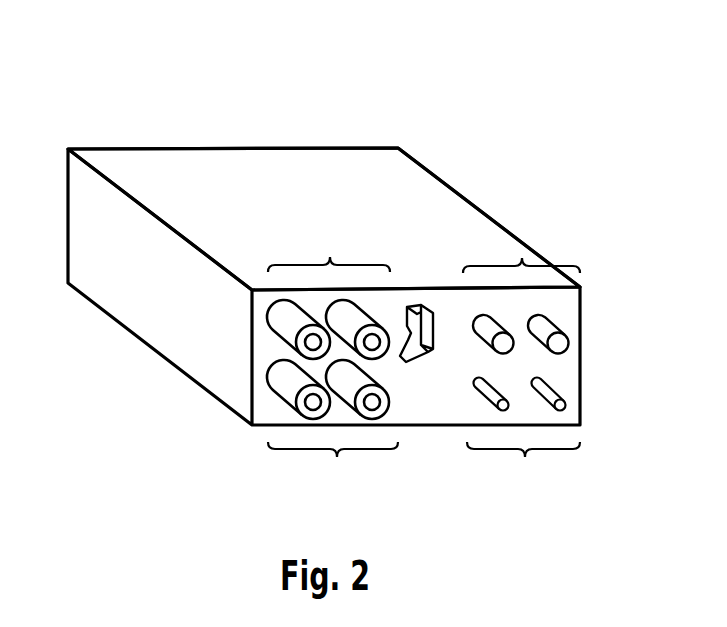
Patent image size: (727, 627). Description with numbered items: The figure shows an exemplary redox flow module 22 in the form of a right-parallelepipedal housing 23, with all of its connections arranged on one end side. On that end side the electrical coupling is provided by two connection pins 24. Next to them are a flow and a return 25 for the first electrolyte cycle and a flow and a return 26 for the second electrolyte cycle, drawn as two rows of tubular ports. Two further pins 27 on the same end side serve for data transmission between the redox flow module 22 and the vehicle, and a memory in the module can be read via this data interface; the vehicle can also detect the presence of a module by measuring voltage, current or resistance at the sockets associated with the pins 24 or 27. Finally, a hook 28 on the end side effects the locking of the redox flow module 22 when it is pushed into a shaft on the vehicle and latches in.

The redox flow module 22 is at (533, 147).
The housing 23 is at (310, 162).
The connection pins 24 is at (517, 252).
The flow and return for the first electrolyte cycle 25 is at (328, 286).
The flow and return for the second electrolyte cycle 26 is at (332, 432).
The pins 27 is at (523, 409).
The hook 28 is at (420, 304).